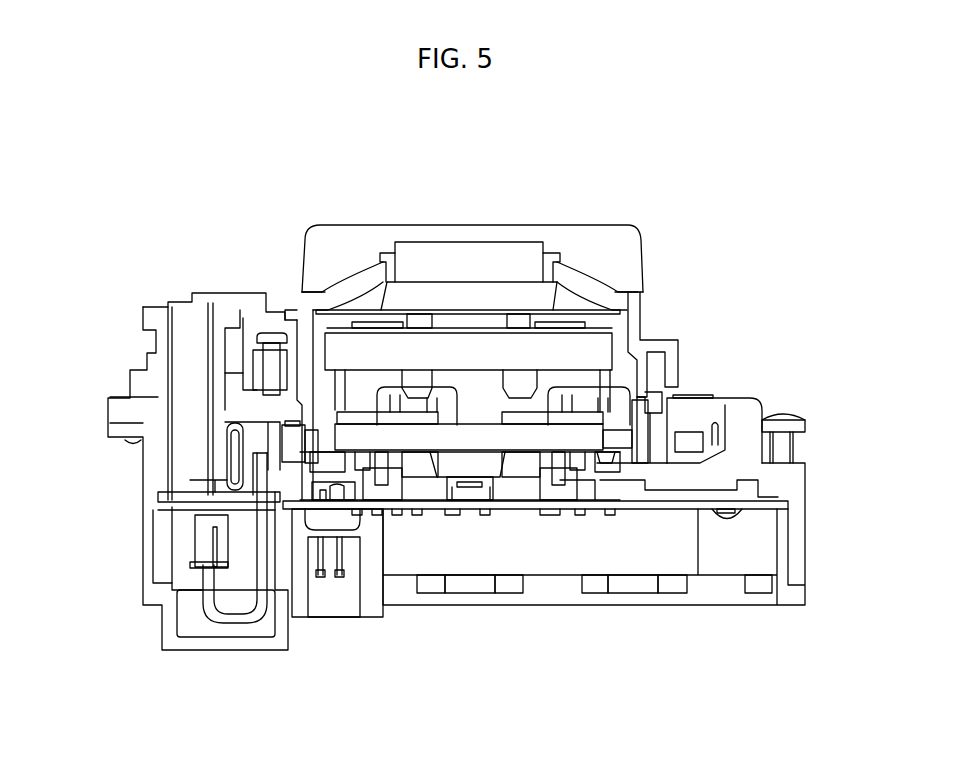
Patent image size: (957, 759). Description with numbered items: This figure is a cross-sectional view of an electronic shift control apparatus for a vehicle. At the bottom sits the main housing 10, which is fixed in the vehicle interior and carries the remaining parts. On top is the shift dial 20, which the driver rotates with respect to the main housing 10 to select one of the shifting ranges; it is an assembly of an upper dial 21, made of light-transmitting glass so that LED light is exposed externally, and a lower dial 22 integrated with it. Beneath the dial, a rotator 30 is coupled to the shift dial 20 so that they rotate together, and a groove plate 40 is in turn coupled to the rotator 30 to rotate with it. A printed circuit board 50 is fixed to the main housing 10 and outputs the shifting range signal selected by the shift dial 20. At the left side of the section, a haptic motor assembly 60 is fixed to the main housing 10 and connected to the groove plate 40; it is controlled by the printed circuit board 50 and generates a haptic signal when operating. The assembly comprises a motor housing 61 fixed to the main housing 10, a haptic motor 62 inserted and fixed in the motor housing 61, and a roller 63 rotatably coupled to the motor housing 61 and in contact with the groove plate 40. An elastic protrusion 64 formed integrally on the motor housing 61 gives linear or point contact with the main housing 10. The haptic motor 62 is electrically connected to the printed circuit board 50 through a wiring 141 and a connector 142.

The main housing 10 is at (782, 537).
The shift dial 20 is at (365, 222).
The upper dial 21 is at (597, 240).
The lower dial 22 is at (632, 305).
The rotator 30 is at (318, 383).
The groove plate 40 is at (555, 435).
The Printed Circuit Board (PCB) 50 is at (460, 500).
The haptic motor assembly 60 is at (224, 466).
The motor housing 61 is at (248, 480).
The haptic motor 62 is at (258, 427).
The roller 63 is at (289, 470).
The elastic protrusion 64 is at (288, 432).
The wiring 141 is at (233, 625).
The connector 142 is at (205, 547).